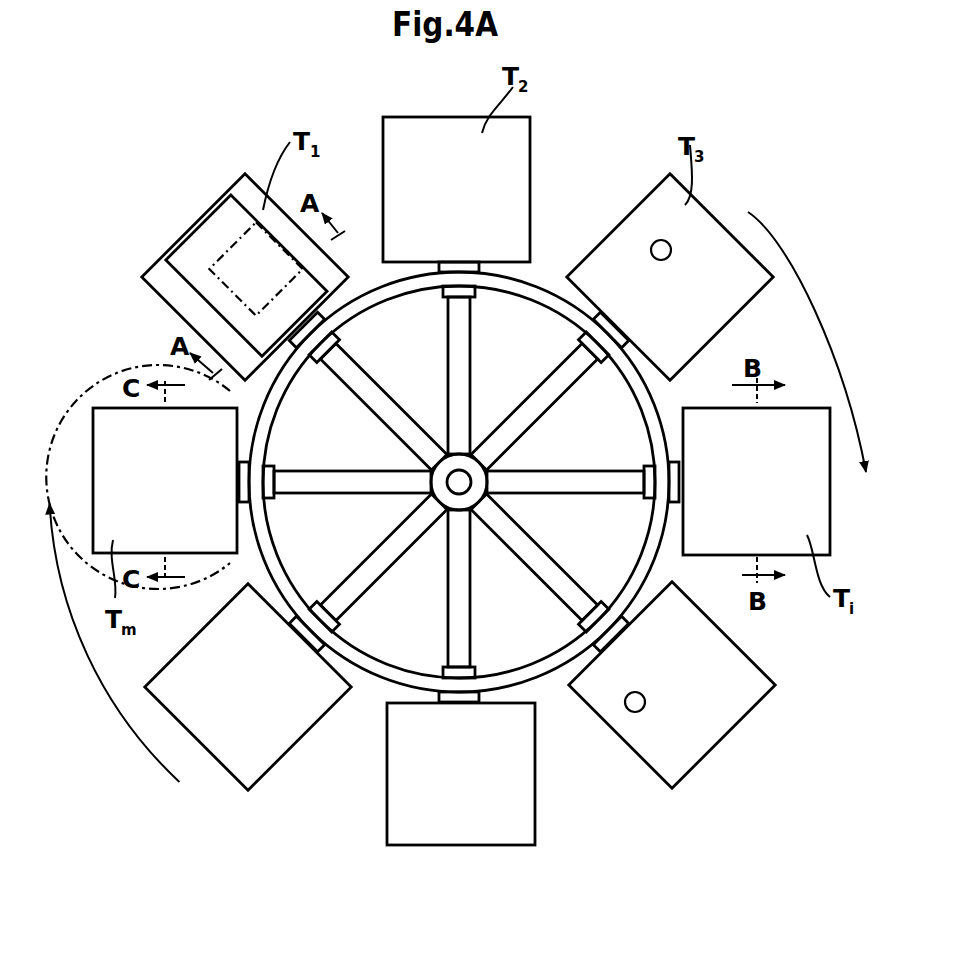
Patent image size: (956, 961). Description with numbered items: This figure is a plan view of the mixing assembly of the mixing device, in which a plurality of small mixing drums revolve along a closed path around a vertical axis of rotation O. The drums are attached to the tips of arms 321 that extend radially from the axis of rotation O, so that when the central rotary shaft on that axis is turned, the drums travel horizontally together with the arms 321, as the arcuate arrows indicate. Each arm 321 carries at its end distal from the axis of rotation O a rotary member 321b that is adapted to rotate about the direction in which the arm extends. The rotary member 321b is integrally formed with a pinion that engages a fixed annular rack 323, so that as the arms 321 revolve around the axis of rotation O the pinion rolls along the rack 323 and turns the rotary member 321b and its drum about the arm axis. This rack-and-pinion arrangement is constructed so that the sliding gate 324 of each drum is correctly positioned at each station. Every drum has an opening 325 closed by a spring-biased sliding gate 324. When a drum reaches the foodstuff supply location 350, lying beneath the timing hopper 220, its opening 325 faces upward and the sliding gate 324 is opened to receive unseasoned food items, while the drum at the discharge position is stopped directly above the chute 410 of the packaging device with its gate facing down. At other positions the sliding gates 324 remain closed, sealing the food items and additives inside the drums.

The supply location 350 is at (210, 254).
The timing hopper 220 is at (240, 233).
The opening 325 is at (172, 252).
The sliding gate 324 is at (158, 293).
The chute 410 is at (93, 387).
The arm 321 is at (448, 393).
The rotary member 321b is at (575, 620).
The fixed annular rack 323 is at (377, 667).
The axis of rotation O is at (450, 474).